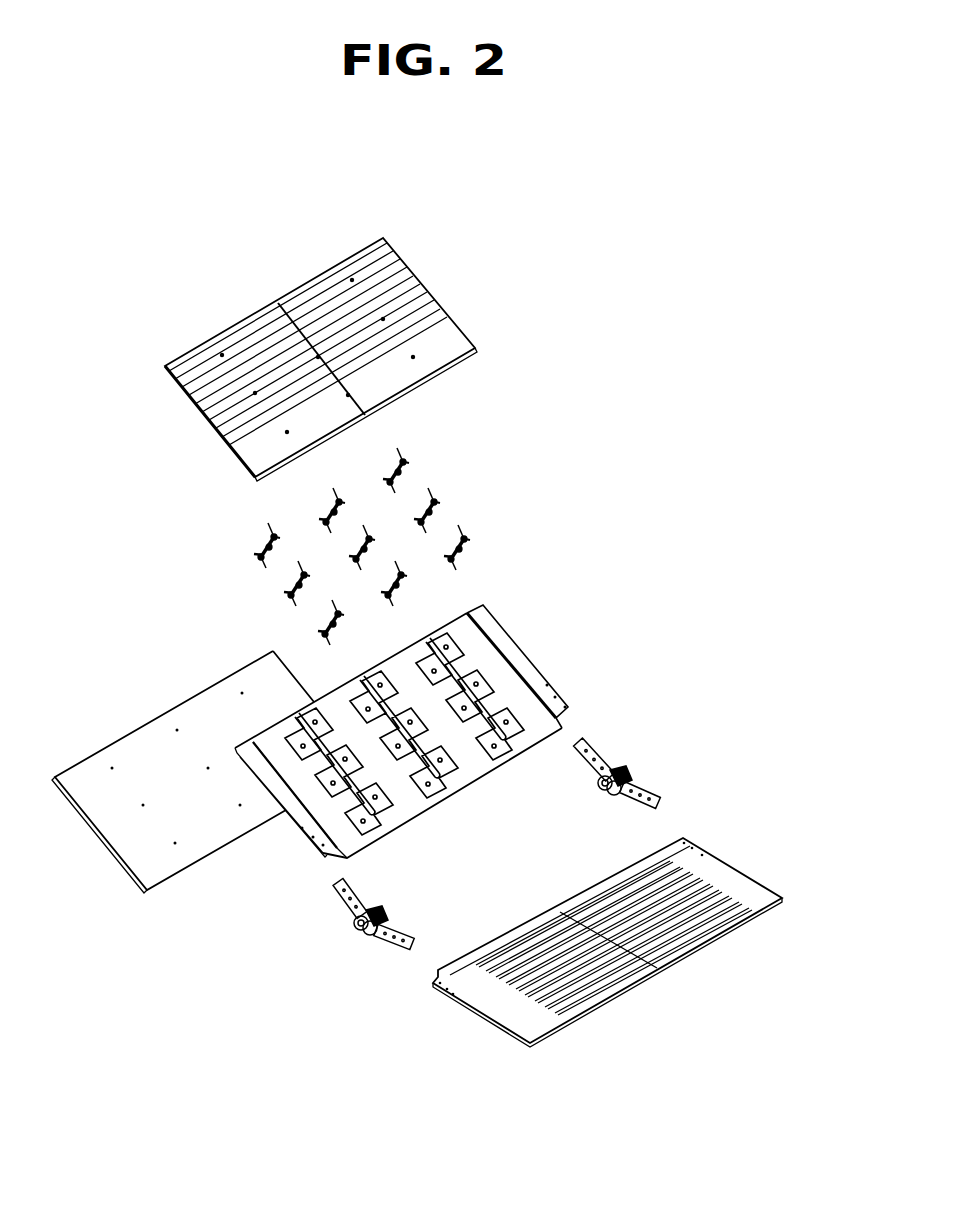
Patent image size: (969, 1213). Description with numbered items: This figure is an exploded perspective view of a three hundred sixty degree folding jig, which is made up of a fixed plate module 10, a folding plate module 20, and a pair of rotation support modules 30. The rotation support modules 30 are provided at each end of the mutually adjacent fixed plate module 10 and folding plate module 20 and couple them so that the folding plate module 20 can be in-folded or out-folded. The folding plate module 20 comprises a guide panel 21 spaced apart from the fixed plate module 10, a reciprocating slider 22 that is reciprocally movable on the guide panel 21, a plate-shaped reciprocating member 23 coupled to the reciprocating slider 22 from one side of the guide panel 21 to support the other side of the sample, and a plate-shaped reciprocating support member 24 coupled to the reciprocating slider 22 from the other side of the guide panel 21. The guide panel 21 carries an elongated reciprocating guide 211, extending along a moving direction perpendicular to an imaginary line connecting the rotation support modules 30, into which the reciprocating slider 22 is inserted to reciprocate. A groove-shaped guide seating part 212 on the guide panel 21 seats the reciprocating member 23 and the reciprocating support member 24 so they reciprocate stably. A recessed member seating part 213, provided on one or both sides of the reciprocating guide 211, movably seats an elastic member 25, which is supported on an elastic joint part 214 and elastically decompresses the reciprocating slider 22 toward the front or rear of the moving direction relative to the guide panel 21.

The fixed plate module 10 is at (746, 852).
The folding plate module 20 is at (580, 491).
The guide panel 21 is at (523, 640).
The reciprocating guide 211 is at (454, 770).
The guide seating part 212 is at (463, 745).
The member seating part 213 is at (482, 697).
The elastic joint part 214 is at (518, 723).
The reciprocating slider 22 is at (432, 510).
The reciprocating member 23 is at (432, 288).
The reciprocating support member 24 is at (167, 712).
The elastic member 25 is at (402, 452).
The rotation support module 30 is at (636, 763).